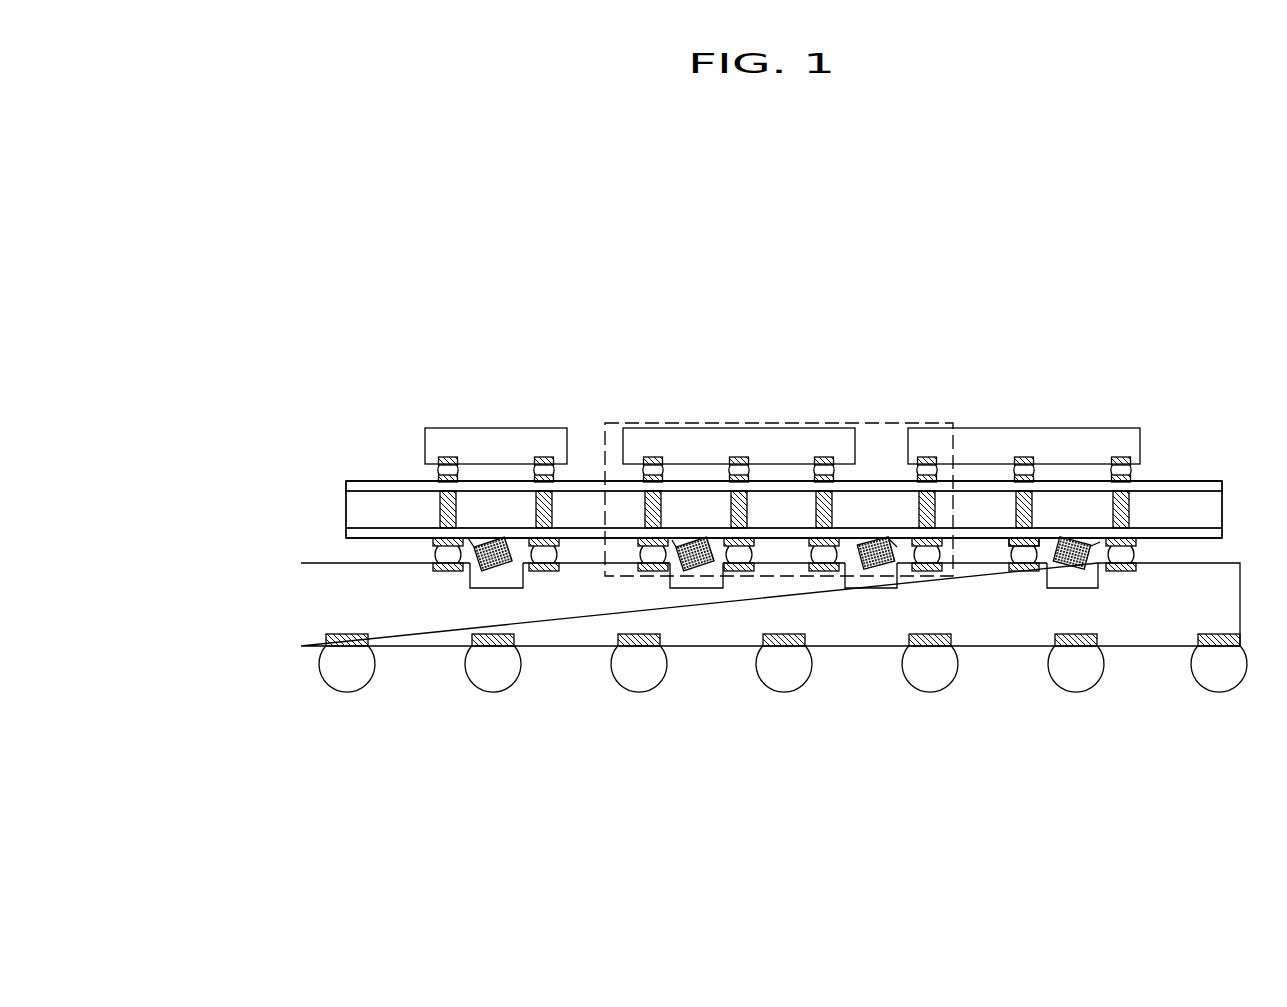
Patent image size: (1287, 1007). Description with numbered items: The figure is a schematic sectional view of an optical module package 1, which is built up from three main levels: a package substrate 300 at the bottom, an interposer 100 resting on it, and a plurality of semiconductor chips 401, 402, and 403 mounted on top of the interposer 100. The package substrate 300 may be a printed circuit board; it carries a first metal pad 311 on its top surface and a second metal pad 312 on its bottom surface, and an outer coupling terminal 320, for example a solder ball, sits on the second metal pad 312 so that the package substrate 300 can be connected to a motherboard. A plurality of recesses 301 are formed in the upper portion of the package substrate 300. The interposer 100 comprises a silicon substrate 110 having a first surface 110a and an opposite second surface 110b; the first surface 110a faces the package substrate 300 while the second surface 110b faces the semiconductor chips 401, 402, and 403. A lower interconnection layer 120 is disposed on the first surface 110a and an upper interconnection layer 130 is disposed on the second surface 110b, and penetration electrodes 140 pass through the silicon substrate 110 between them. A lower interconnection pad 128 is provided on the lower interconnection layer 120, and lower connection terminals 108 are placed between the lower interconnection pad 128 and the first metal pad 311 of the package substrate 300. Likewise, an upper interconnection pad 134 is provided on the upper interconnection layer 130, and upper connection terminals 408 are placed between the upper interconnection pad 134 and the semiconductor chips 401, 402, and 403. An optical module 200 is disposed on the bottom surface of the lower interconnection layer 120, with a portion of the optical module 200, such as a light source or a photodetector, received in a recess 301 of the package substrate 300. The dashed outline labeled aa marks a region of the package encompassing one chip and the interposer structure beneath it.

The optical module package 1 is at (1198, 327).
The region aa is at (812, 423).
The interposer 100 is at (262, 478).
The lower connection terminals 108 is at (437, 548).
The silicon substrate 110 is at (360, 510).
The first surface 110a is at (1163, 533).
The second surface 110b is at (1173, 488).
The lower interconnection layer 120 is at (360, 535).
The lower interconnection pad 128 is at (1022, 542).
The upper interconnection layer 130 is at (360, 487).
The upper interconnection pad 134 is at (437, 478).
The penetration electrodes 140 is at (460, 508).
The optical module 200 is at (472, 555).
The package substrate 300 is at (313, 603).
The recesses 301 is at (523, 573).
The first metal pad 311 is at (428, 568).
The second metal pad 312 is at (330, 637).
The outer coupling terminal 320 is at (330, 669).
The semiconductor chip 401 is at (533, 440).
The semiconductor chip 402 is at (690, 440).
The semiconductor chip 403 is at (997, 440).
The upper connection terminals 408 is at (437, 471).